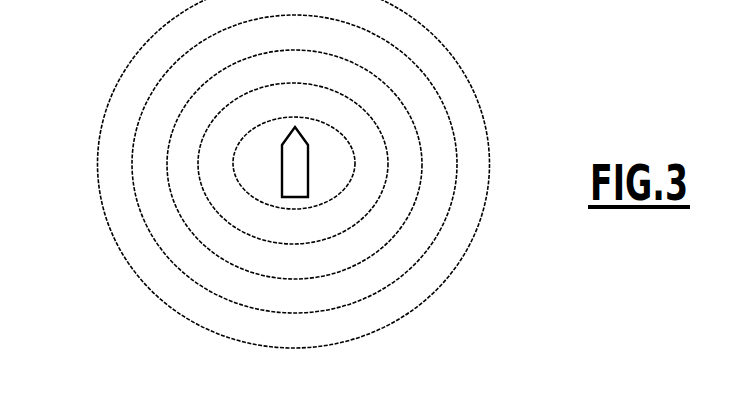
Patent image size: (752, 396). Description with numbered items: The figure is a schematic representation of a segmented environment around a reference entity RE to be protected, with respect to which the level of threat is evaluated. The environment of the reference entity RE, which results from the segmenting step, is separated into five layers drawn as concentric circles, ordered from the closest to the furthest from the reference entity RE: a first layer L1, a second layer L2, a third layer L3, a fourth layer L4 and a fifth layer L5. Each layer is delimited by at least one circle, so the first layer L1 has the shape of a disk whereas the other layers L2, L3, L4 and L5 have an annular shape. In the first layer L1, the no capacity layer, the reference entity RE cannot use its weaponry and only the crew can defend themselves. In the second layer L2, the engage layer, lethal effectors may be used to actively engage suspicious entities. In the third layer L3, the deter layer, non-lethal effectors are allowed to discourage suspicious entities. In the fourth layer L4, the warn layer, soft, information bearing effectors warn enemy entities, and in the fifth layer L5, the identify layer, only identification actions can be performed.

The first layer L1 is at (318, 133).
The second layer L2 is at (355, 125).
The third layer L3 is at (398, 133).
The fourth layer L4 is at (443, 153).
The fifth layer L5 is at (463, 217).
The reference entity RE is at (288, 173).